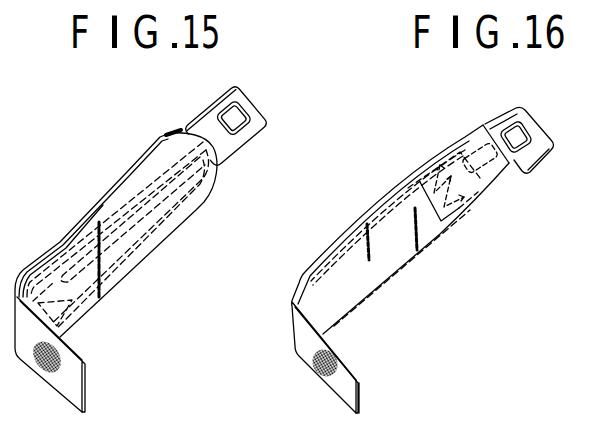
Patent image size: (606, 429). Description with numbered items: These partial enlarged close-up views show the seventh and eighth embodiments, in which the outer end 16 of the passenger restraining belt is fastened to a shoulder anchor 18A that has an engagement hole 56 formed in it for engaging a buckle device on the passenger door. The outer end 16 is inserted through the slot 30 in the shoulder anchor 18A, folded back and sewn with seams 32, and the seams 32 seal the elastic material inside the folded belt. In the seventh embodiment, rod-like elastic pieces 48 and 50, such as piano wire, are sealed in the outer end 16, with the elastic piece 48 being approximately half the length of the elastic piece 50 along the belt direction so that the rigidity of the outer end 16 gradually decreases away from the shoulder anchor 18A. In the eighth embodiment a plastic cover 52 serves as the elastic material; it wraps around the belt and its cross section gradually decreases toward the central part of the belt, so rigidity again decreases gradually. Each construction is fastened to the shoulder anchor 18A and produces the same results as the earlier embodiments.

In FIG. 15, the outer end 16 is at (110, 297).
In FIG. 16, the outer end 16 is at (312, 310).
In FIG. 15, the shoulder anchor 18A is at (198, 127).
In FIG. 16, the shoulder anchor 18A is at (498, 124).
In FIG. 15, the slot 30 is at (218, 165).
In FIG. 16, the seams 32 is at (473, 221).
In FIG. 15, the elastic piece 48 is at (128, 189).
In FIG. 15, the elastic piece 50 is at (140, 233).
In FIG. 16, the plastic cover 52 is at (437, 248).
In FIG. 15, the engagement hole 56 is at (240, 114).
In FIG. 16, the engagement hole 56 is at (522, 133).